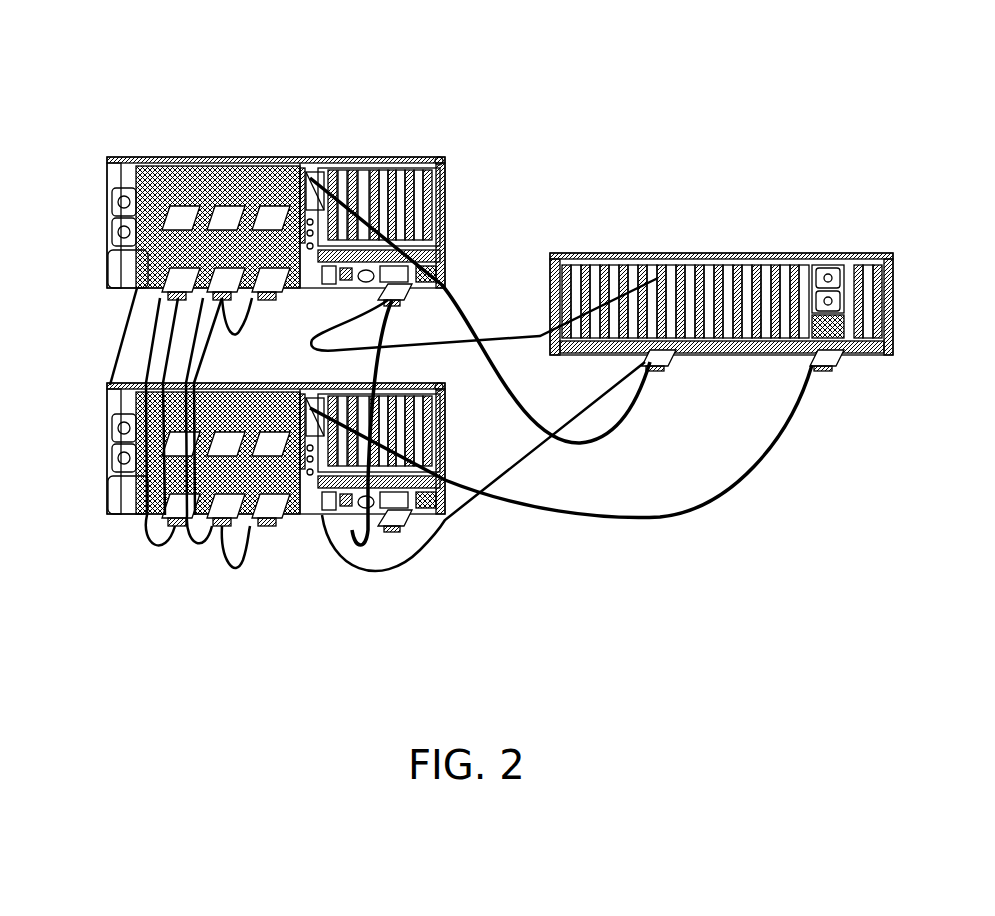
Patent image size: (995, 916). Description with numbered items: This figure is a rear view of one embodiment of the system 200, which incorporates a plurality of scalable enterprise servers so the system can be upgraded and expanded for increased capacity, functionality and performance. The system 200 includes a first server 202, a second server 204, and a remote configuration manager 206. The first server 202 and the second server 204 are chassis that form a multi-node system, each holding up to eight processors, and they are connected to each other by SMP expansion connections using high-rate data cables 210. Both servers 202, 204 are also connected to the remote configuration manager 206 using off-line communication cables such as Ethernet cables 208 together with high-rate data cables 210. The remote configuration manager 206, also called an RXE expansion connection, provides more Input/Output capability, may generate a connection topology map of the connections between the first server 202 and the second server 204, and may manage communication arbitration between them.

The system 200 is at (96, 58).
The first server 202 is at (110, 157).
The second server 204 is at (112, 383).
The remote configuration manager 206 is at (548, 255).
The Ethernet cables 208 is at (520, 337).
The high-rate data cables 210 is at (130, 313).